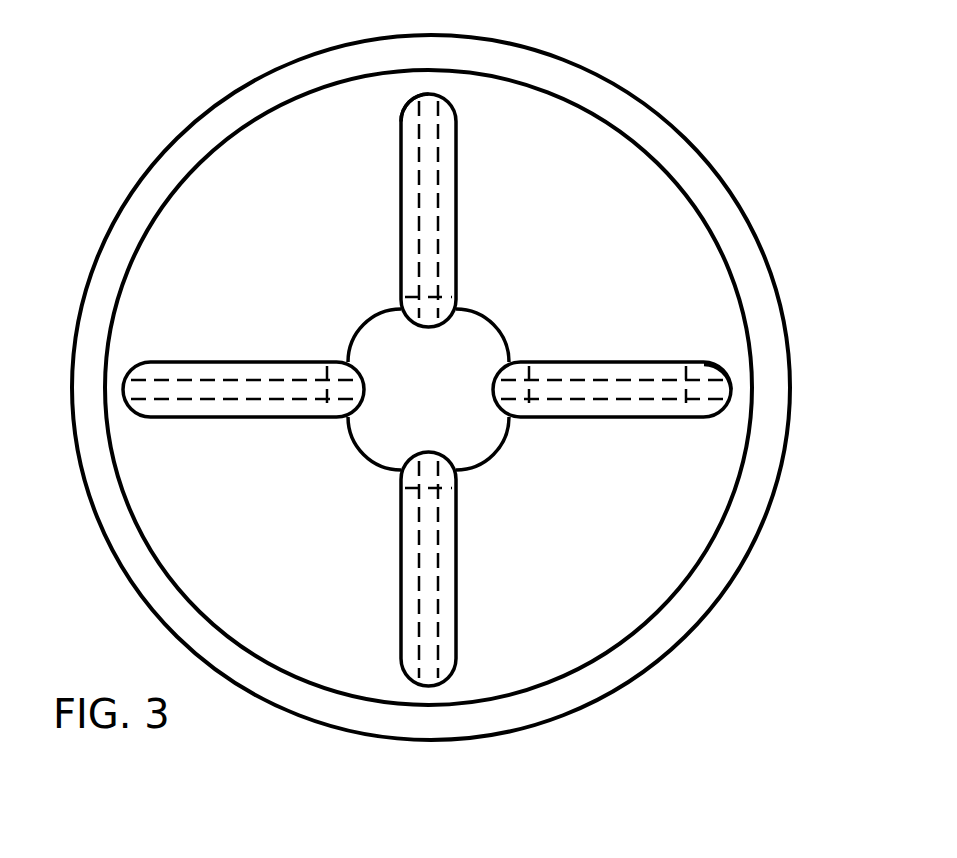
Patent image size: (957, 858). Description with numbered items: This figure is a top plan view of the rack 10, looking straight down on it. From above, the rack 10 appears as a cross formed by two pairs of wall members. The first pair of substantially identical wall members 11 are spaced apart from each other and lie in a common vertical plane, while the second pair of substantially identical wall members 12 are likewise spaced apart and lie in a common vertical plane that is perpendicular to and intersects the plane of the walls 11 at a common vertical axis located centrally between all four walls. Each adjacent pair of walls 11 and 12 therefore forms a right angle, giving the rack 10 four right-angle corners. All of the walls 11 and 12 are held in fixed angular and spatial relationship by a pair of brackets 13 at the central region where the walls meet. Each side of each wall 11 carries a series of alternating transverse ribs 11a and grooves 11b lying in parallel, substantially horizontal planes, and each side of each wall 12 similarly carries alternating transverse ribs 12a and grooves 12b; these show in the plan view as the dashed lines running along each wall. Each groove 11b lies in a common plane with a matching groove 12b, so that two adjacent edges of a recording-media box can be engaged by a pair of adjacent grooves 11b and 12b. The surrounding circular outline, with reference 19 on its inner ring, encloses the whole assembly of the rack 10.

The rack 10 is at (636, 90).
The first pair of wall members 11 is at (732, 382).
The transverse ribs 11a is at (722, 410).
The grooves 11b is at (686, 402).
The second pair of wall members 12 is at (450, 110).
The transverse ribs 12a is at (397, 135).
The grooves 12b is at (417, 118).
The brackets 13 is at (475, 355).
The peripheral rim 19 is at (712, 197).